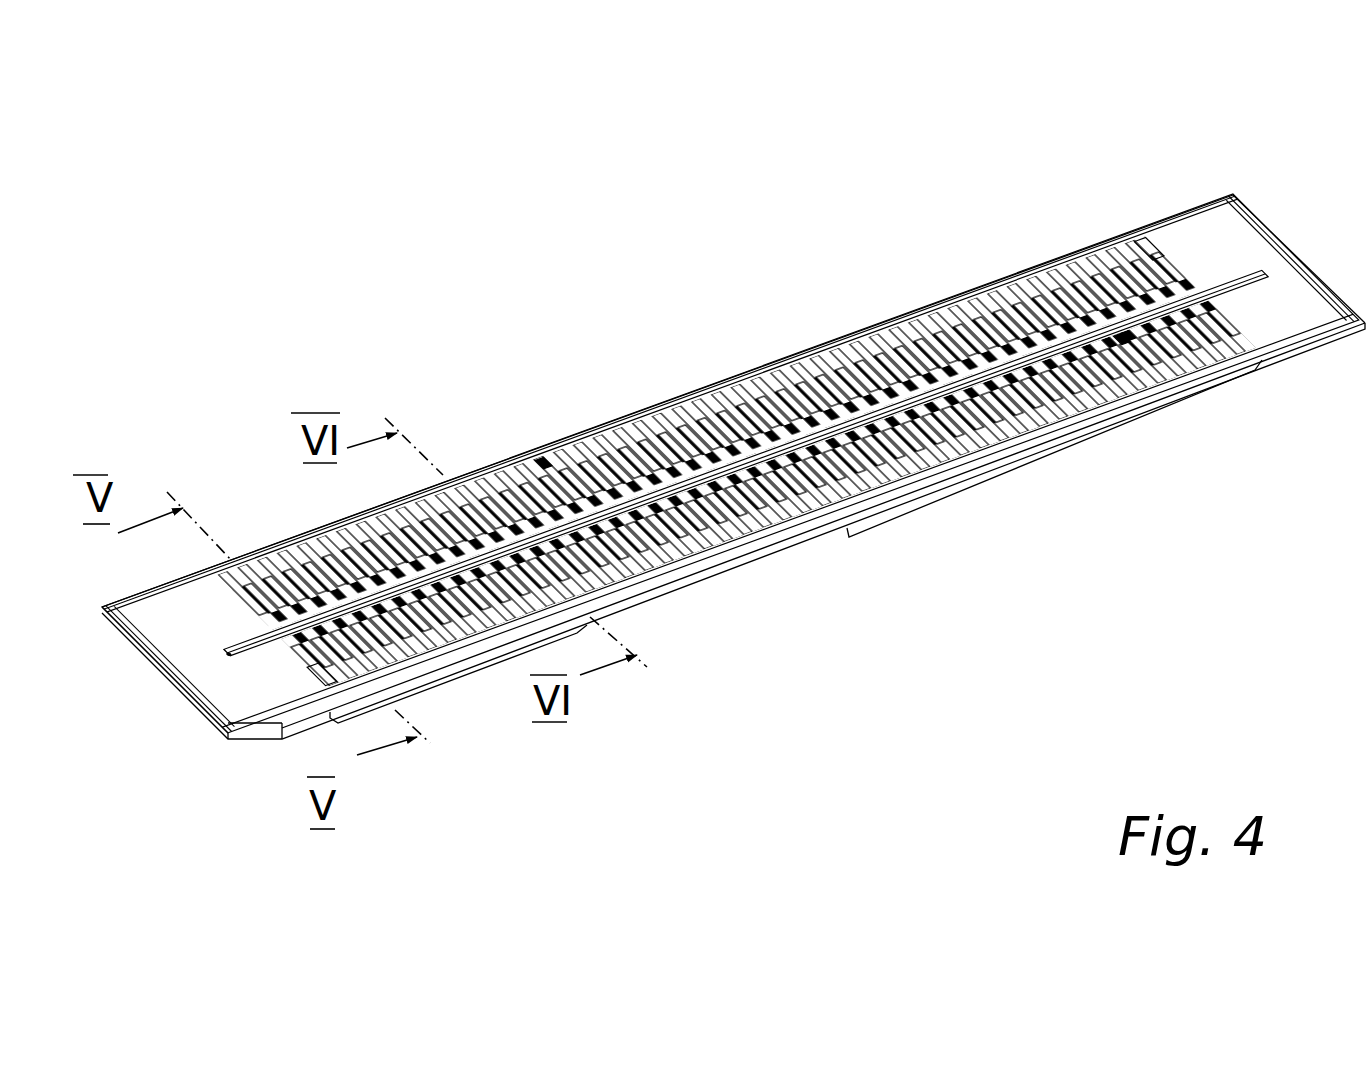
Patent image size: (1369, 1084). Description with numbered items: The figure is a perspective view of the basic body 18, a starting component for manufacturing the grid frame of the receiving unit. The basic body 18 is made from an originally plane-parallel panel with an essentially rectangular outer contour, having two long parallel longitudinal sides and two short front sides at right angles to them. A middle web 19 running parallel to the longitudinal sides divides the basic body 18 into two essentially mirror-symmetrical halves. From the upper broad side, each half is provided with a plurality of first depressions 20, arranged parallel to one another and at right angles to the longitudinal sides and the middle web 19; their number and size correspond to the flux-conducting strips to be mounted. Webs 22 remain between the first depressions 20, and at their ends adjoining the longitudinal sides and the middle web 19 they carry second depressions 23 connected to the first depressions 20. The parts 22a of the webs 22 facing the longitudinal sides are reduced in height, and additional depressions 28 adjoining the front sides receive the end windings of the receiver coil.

The basic body 18 is at (733, 466).
The middle web 19 is at (1238, 280).
The first depressions 20 is at (837, 517).
The webs 22 is at (957, 303).
The parts of the webs 22a is at (1147, 250).
The second depressions 23 is at (540, 462).
The additional depressions 28 is at (1302, 325).